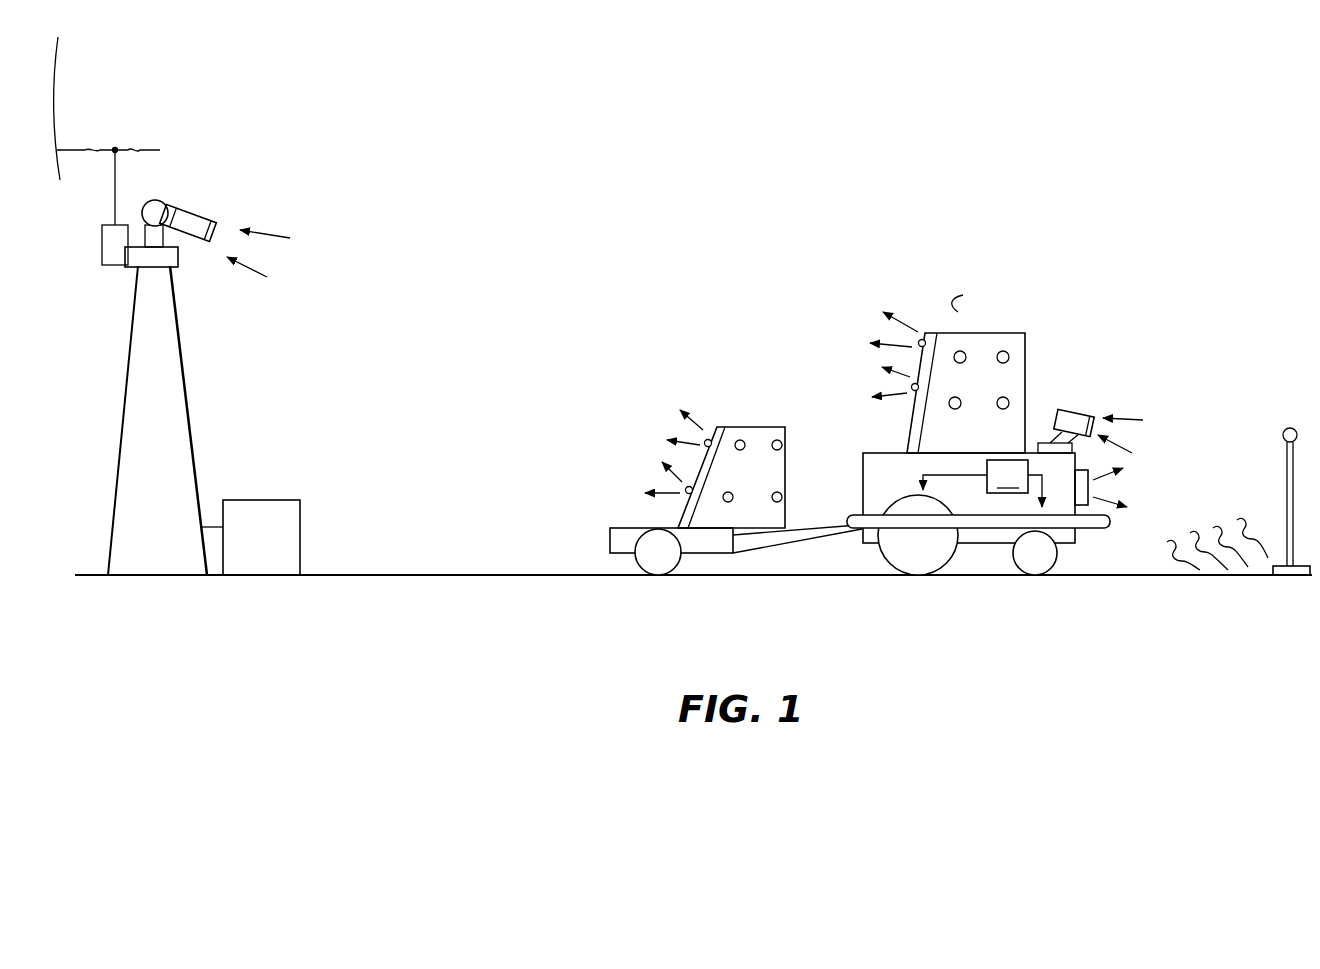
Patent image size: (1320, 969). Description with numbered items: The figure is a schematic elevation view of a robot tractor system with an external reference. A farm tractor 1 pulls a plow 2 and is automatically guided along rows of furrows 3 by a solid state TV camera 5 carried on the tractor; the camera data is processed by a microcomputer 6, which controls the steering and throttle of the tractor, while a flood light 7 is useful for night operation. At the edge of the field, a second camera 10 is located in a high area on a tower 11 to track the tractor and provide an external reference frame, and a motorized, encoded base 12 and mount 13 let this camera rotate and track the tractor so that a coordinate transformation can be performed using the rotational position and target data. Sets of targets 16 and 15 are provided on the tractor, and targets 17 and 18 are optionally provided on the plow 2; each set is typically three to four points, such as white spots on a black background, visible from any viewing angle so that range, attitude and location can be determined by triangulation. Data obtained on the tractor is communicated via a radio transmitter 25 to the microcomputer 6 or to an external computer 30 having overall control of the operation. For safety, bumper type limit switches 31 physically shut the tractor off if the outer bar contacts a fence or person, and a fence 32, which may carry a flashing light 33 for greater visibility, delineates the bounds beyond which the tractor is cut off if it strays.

The farm tractor 1 is at (985, 545).
The plow 2 is at (735, 517).
The furrows 3 is at (1200, 566).
The solid state TV camera 5 is at (1087, 412).
The microcomputer 6 is at (982, 483).
The flood light 7 is at (1118, 488).
The second camera 10 is at (207, 215).
The tower 11 is at (128, 380).
The motorized, encoded base 12 is at (180, 258).
The mount 13 is at (157, 200).
The targets 15 is at (922, 333).
The targets 16 is at (982, 333).
The targets 17 is at (712, 430).
The targets 18 is at (768, 427).
The radio transmitter 25 is at (103, 247).
The external computer 30 is at (271, 553).
The bumper type limit switches 31 is at (860, 532).
The fence 32 is at (1288, 547).
The flashing light 33 is at (1287, 428).